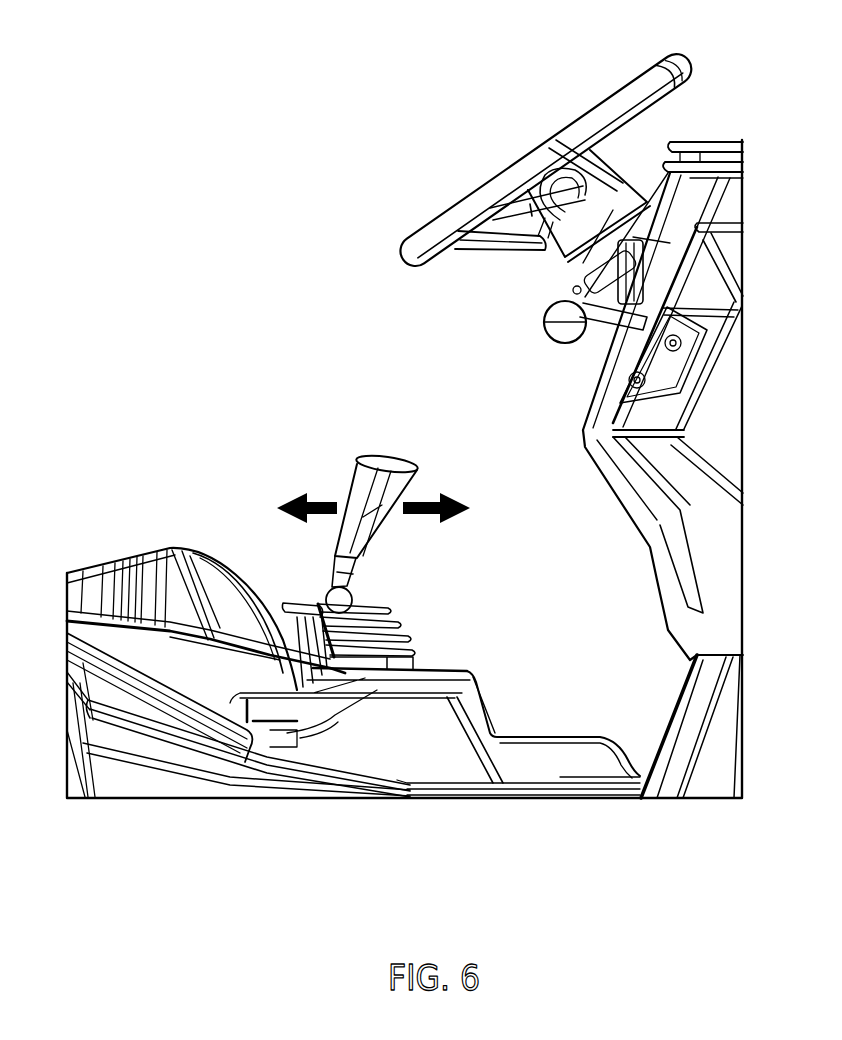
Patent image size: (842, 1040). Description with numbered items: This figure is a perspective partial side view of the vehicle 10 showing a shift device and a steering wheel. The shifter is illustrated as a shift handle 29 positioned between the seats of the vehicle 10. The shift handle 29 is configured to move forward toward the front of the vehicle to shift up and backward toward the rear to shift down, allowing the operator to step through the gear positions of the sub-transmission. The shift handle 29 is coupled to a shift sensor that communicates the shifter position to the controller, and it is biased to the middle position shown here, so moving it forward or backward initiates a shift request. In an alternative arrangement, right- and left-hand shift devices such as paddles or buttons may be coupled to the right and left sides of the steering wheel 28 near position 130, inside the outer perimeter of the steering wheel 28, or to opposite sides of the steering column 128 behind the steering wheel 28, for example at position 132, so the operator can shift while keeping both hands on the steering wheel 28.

The vehicle 10 is at (381, 50).
The steering wheel 28 is at (377, 276).
The shift handle 29 is at (403, 432).
The steering column 128 is at (540, 262).
The position 130 is at (504, 152).
The position 132 is at (582, 185).